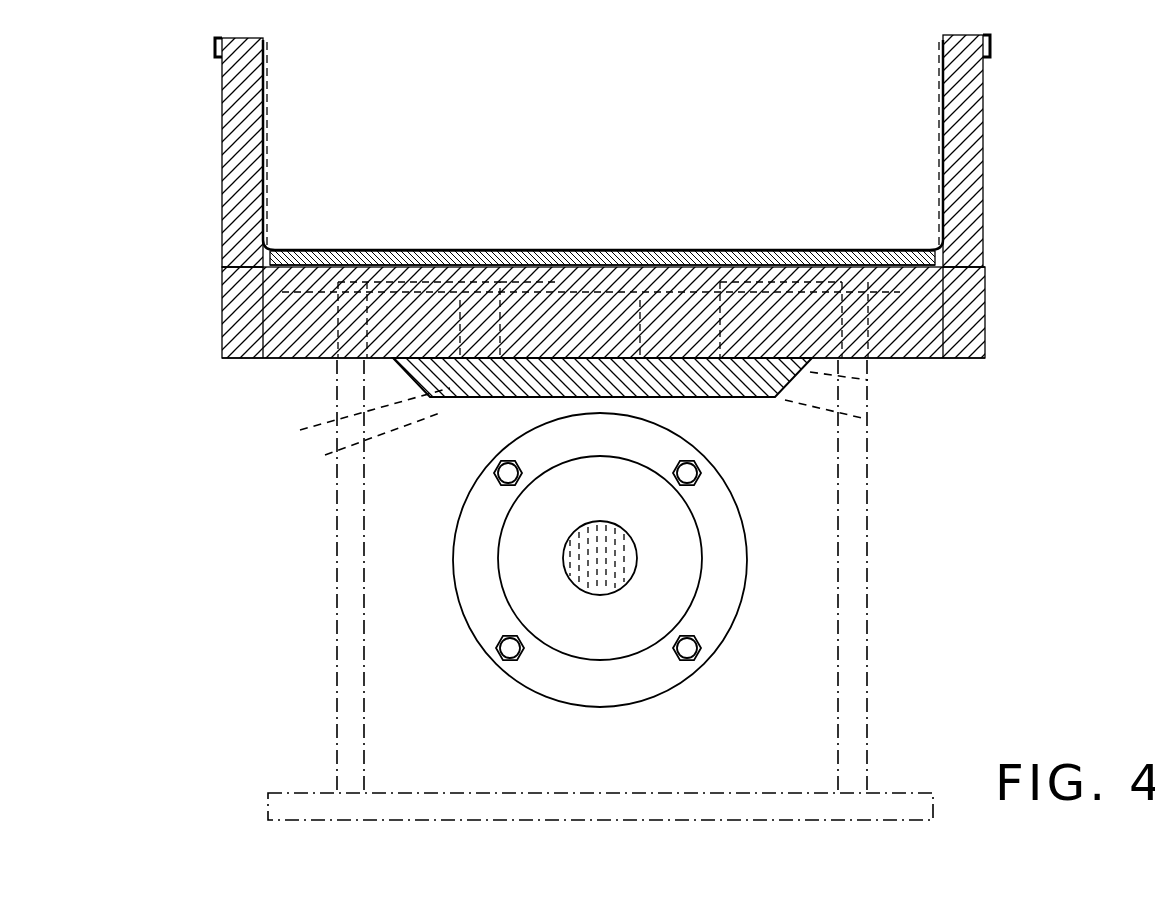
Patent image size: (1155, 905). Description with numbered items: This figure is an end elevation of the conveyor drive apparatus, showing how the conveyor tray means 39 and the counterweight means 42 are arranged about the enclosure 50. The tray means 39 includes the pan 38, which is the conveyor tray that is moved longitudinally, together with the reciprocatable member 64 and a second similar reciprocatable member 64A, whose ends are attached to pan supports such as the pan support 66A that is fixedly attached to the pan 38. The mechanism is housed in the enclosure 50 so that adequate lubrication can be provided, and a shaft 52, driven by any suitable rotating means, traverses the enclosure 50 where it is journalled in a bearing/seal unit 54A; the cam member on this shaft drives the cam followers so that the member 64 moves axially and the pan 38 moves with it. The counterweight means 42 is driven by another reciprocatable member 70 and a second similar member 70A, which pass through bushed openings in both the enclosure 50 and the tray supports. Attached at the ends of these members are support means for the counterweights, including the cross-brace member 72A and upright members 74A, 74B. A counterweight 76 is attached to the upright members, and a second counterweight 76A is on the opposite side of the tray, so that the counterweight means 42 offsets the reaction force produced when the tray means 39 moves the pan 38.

The pan 38 is at (578, 247).
The conveyor tray means 39 is at (270, 119).
The counterweight means 42 is at (222, 273).
The enclosure 50 is at (865, 615).
The shaft 52 is at (575, 603).
The bearing/seal unit 54A is at (497, 568).
The reciprocatable member 64 is at (361, 417).
The reciprocatable member 64A is at (870, 383).
The pan support 66A is at (470, 405).
The reciprocatable member 70 is at (367, 447).
The reciprocatable member 70A is at (865, 422).
The cross-brace member 72A is at (268, 360).
The upright member 74A is at (235, 166).
The upright member 74B is at (968, 157).
The counterweight 76 is at (222, 120).
The counterweight 76A is at (983, 98).